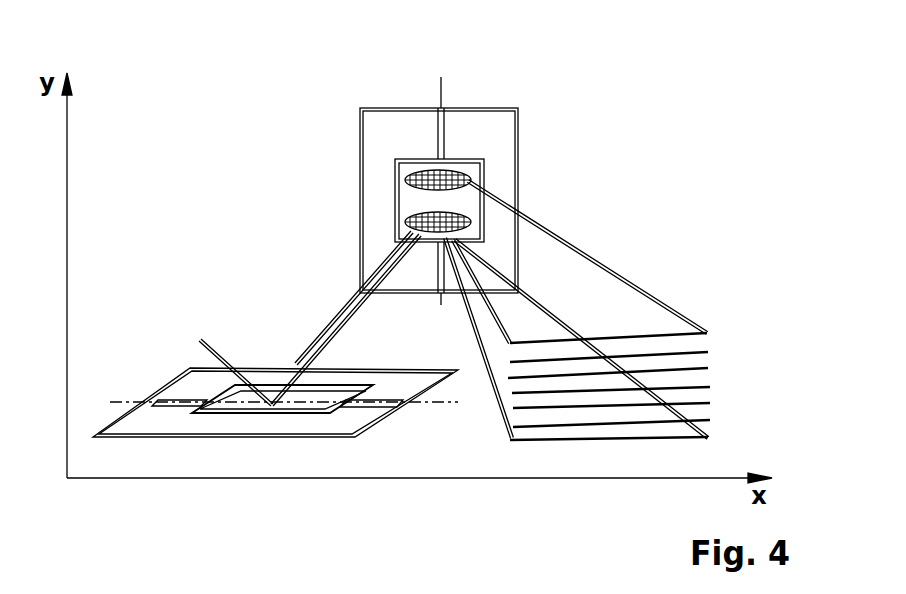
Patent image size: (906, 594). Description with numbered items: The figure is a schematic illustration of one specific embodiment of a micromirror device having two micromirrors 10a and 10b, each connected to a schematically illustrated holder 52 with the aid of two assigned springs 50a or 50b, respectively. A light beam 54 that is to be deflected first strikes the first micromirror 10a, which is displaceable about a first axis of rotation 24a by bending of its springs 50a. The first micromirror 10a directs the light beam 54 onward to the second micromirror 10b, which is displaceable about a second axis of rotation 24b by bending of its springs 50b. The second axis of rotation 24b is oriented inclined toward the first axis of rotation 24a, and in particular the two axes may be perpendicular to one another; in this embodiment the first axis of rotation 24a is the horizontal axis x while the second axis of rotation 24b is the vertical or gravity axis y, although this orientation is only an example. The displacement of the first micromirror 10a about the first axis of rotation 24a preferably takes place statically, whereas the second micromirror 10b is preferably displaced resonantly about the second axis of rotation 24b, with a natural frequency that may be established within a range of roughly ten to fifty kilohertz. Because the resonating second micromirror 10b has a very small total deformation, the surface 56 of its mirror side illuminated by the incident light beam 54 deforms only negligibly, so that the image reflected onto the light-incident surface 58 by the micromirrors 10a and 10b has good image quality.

The first micromirror 10a is at (320, 404).
The second micromirror 10b is at (468, 178).
The first axis of rotation 24a is at (110, 400).
The second axis of rotation 24b is at (486, 69).
The springs 50a is at (177, 407).
The springs 50b is at (440, 130).
The holder 52 is at (520, 133).
The light beam 54 is at (535, 297).
The surface 56 is at (423, 168).
The light-incident surface 58 is at (603, 407).